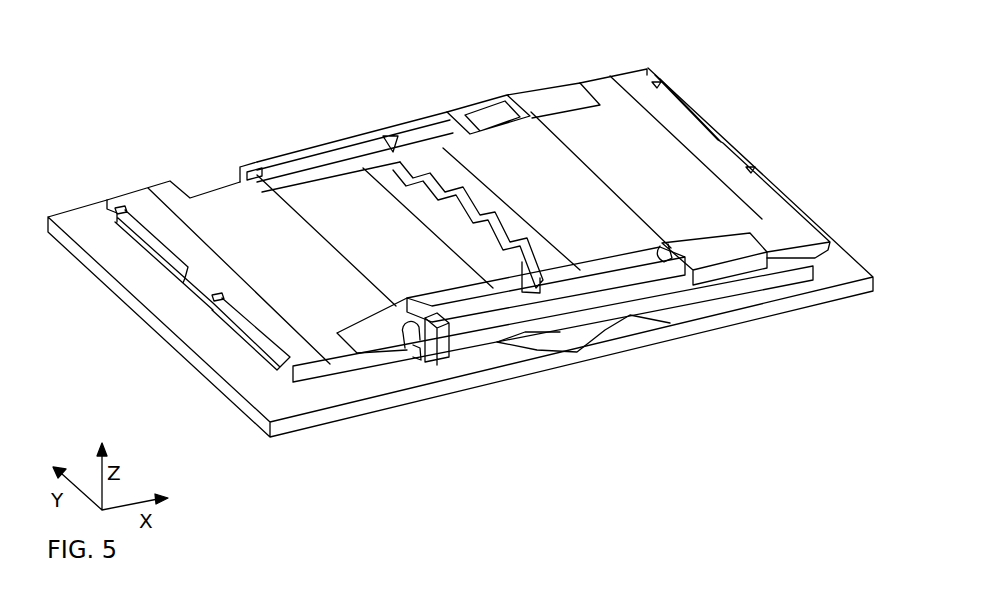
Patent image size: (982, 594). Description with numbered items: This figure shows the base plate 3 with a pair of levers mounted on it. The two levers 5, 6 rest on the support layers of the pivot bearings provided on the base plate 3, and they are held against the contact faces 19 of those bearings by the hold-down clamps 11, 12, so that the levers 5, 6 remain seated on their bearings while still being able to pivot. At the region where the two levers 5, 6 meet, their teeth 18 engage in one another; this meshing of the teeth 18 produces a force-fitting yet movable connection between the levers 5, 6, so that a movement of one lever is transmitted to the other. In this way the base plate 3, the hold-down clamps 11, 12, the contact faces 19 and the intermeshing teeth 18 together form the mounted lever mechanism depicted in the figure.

The base plate 3 is at (218, 373).
The lever 5 is at (237, 214).
The lever 6 is at (594, 130).
The hold-down clamp 11 is at (514, 98).
The hold-down clamp 12 is at (240, 167).
The teeth 18 is at (447, 195).
The contact face 19 is at (417, 348).